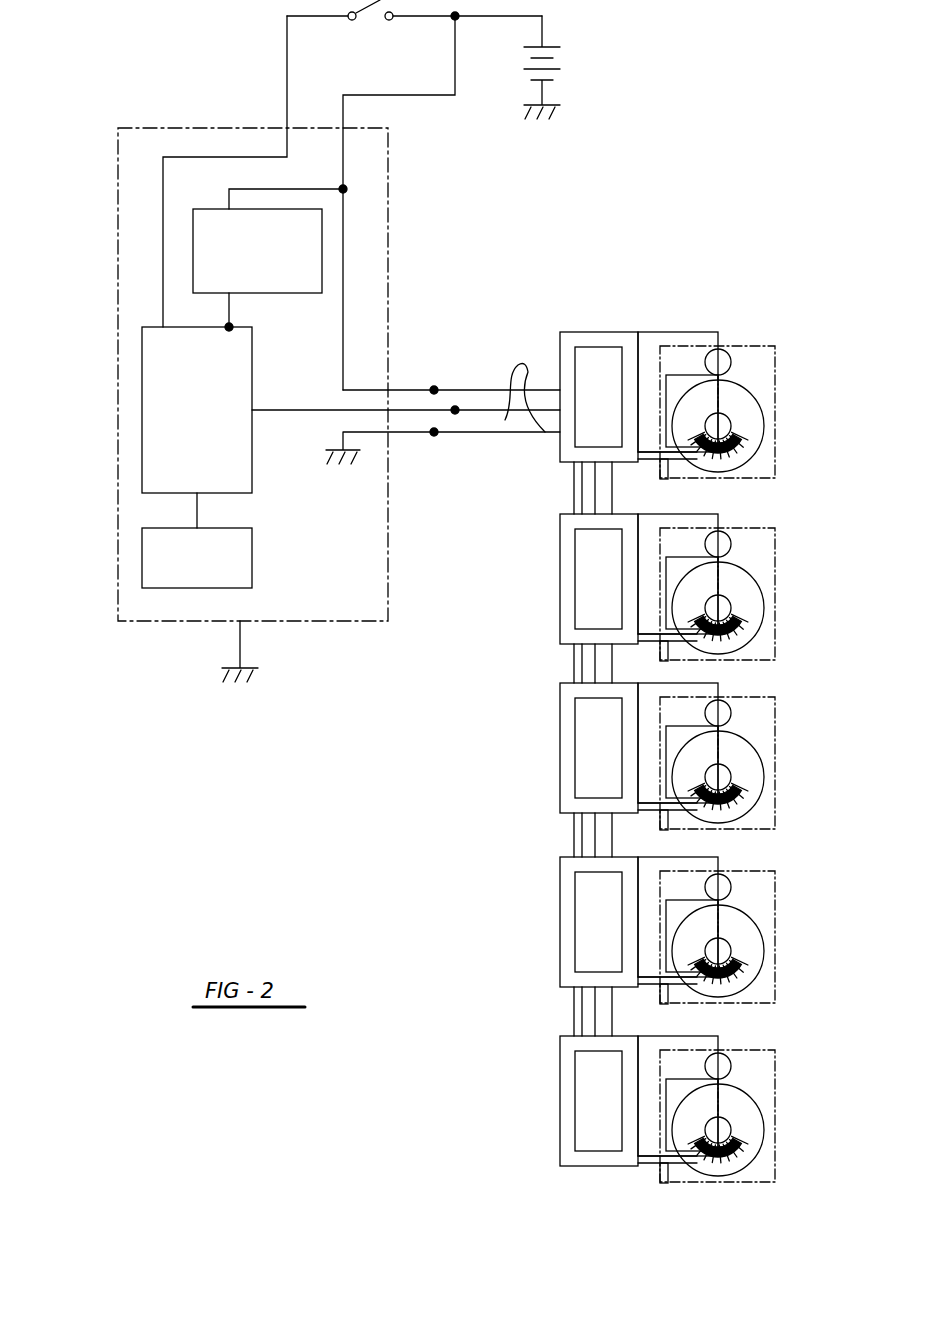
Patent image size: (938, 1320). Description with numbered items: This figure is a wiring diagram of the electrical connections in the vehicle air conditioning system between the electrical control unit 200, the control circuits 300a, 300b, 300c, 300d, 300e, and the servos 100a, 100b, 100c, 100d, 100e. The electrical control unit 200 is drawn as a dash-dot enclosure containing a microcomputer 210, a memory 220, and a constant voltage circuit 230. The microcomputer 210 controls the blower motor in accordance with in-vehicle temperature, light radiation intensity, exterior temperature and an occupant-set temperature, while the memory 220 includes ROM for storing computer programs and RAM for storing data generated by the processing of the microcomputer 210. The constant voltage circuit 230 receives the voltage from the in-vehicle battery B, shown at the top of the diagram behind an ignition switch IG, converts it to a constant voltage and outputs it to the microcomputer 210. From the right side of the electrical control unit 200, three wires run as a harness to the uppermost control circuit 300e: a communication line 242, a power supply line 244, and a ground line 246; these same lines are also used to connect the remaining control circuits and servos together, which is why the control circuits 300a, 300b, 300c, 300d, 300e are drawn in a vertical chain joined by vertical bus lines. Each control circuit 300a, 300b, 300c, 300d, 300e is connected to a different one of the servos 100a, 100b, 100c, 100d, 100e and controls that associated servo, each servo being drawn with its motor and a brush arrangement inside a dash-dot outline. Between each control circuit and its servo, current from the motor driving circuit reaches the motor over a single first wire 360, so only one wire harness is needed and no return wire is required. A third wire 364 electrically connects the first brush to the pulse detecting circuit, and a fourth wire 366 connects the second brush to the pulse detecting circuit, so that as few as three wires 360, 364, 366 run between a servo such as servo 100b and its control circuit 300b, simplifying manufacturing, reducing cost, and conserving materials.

The electrical control unit 200 is at (310, 621).
The microcomputer 210 is at (142, 443).
The memory 220 is at (252, 556).
The constant voltage circuit 230 is at (282, 293).
The communication line 242 is at (455, 410).
The power supply line 244 is at (434, 390).
The ground line 246 is at (434, 432).
The control circuit 300e is at (600, 333).
The control circuit 300d is at (560, 583).
The control circuit 300c is at (560, 752).
The control circuit 300b is at (560, 932).
The control circuit 300a is at (560, 1107).
The first wire 360 is at (665, 333).
The third wire 364 is at (667, 479).
The fourth wire 366 is at (652, 462).
The servo 100e is at (780, 367).
The servo 100d is at (780, 550).
The servo 100c is at (780, 777).
The servo 100b is at (780, 892).
The servo 100a is at (780, 1071).
The ignition switch IG is at (372, 22).
The in-vehicle battery B is at (560, 61).